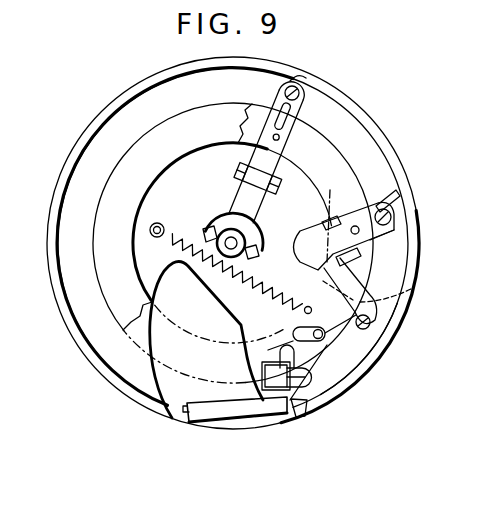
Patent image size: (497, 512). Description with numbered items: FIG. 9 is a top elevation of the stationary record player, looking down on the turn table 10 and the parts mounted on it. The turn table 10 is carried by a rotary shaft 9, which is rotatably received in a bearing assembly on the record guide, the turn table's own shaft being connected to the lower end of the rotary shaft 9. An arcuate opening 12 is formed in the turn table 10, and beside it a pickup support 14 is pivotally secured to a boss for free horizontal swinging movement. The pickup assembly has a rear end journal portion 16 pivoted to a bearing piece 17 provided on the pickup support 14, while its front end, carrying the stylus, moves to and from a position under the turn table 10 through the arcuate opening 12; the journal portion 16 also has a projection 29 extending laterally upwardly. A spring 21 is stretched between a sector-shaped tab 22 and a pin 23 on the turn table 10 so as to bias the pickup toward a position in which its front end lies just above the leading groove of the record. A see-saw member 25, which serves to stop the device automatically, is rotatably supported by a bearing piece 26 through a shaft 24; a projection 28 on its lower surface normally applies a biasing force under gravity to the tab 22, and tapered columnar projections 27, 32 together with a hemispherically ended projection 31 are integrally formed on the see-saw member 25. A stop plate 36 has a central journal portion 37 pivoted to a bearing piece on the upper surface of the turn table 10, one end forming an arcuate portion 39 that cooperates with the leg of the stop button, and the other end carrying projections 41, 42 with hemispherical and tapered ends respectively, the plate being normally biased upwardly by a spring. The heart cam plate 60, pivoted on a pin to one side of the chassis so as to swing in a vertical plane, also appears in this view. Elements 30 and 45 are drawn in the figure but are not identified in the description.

The rotary shaft 9 is at (222, 224).
The turn table 10 is at (217, 243).
The arcuate opening 12 is at (180, 396).
The pickup support 14 is at (332, 370).
The rear end journal portion 16 is at (311, 380).
The bearing piece 17 is at (313, 417).
The spring 21 is at (220, 272).
The sector-shaped tab 22 is at (383, 343).
The pin 23 is at (132, 240).
The shaft 24 is at (358, 260).
The see-saw member 25 is at (408, 231).
The bearing piece 26 is at (358, 252).
The columnar projection 27 is at (391, 320).
The projection 28 is at (405, 296).
The projection 29 is at (288, 330).
The link 30 is at (325, 338).
The projection 31 is at (355, 226).
The columnar projection 32 is at (392, 216).
The stop plate 36 is at (280, 174).
The central journal portion 37 is at (290, 197).
The arcuate portion 39 is at (247, 236).
The projection 41 is at (275, 152).
The projection 42 is at (300, 91).
The mounting plate 45 is at (247, 413).
The heart cam plate 60 is at (388, 200).